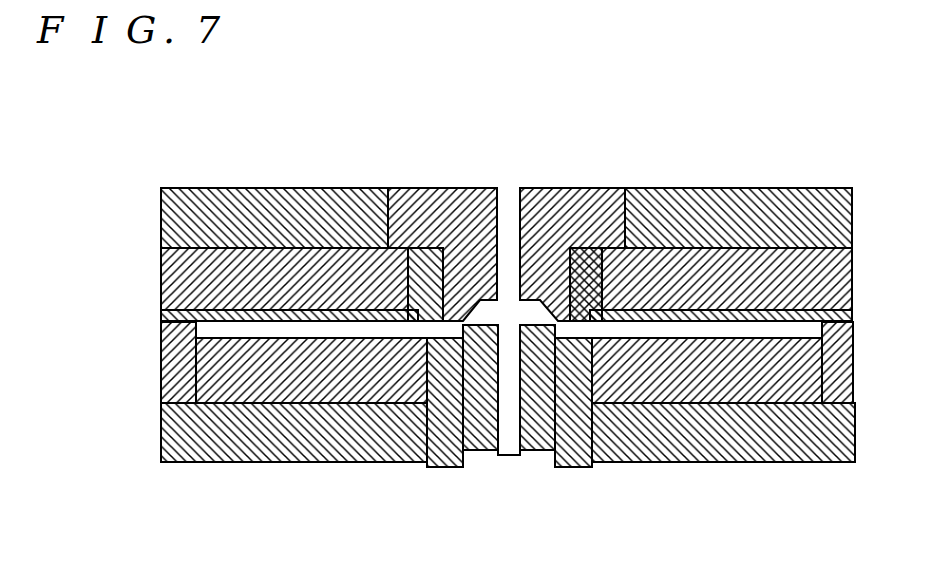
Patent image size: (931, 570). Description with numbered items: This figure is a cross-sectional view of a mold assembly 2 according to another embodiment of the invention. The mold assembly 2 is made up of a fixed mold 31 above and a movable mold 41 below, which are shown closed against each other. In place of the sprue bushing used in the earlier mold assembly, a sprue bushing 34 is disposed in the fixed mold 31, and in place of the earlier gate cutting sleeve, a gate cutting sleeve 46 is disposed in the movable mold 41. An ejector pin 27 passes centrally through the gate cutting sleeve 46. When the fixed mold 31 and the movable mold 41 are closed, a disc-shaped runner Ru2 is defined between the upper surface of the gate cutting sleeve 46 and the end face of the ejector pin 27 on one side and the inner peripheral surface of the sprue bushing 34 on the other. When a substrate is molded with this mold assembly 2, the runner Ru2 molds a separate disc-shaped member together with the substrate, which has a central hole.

The mold assembly 2 is at (531, 146).
The runner Ru2 is at (507, 250).
The sprue bushing 34 is at (563, 188).
The fixed mold 31 is at (715, 178).
The movable mold 41 is at (703, 476).
The gate cutting sleeve 46 is at (480, 449).
The ejector pin 27 is at (508, 453).